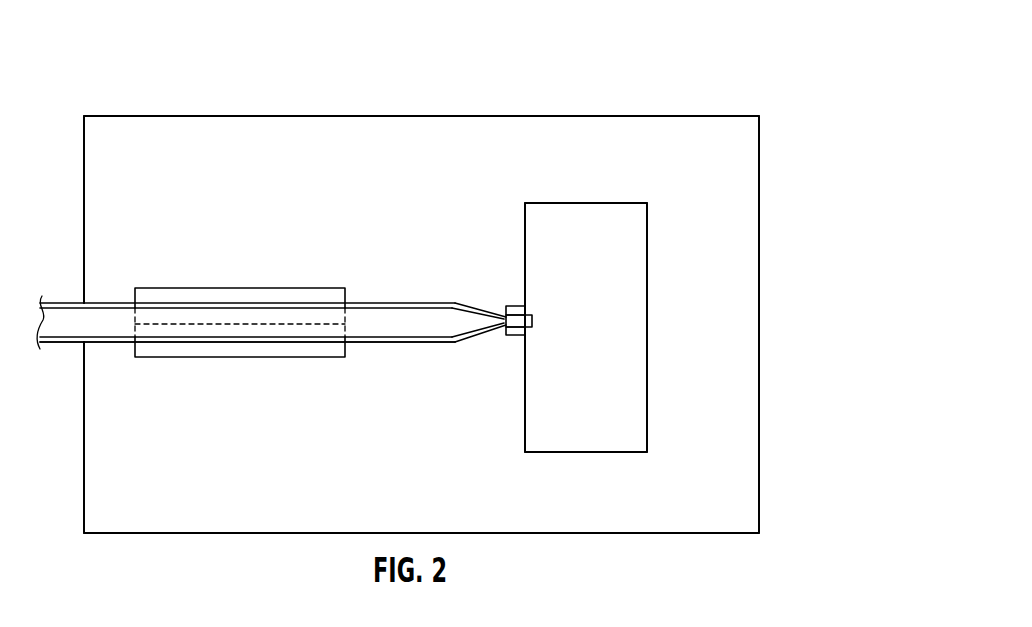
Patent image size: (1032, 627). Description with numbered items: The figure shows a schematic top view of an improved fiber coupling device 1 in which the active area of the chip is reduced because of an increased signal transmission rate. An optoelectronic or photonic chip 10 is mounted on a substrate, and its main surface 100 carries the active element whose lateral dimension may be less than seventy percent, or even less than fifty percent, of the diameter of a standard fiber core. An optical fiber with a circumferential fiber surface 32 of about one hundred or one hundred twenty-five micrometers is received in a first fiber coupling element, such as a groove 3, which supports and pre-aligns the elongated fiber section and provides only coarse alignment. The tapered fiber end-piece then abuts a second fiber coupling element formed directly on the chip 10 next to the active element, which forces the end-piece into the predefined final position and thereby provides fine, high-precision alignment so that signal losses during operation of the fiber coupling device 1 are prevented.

The fiber coupling device 1 is at (435, 80).
The optoelectronic or photonic chip 10 is at (637, 262).
The main surface 100 is at (524, 434).
The groove 3 is at (228, 325).
The circumferential fiber surface 32 is at (388, 343).